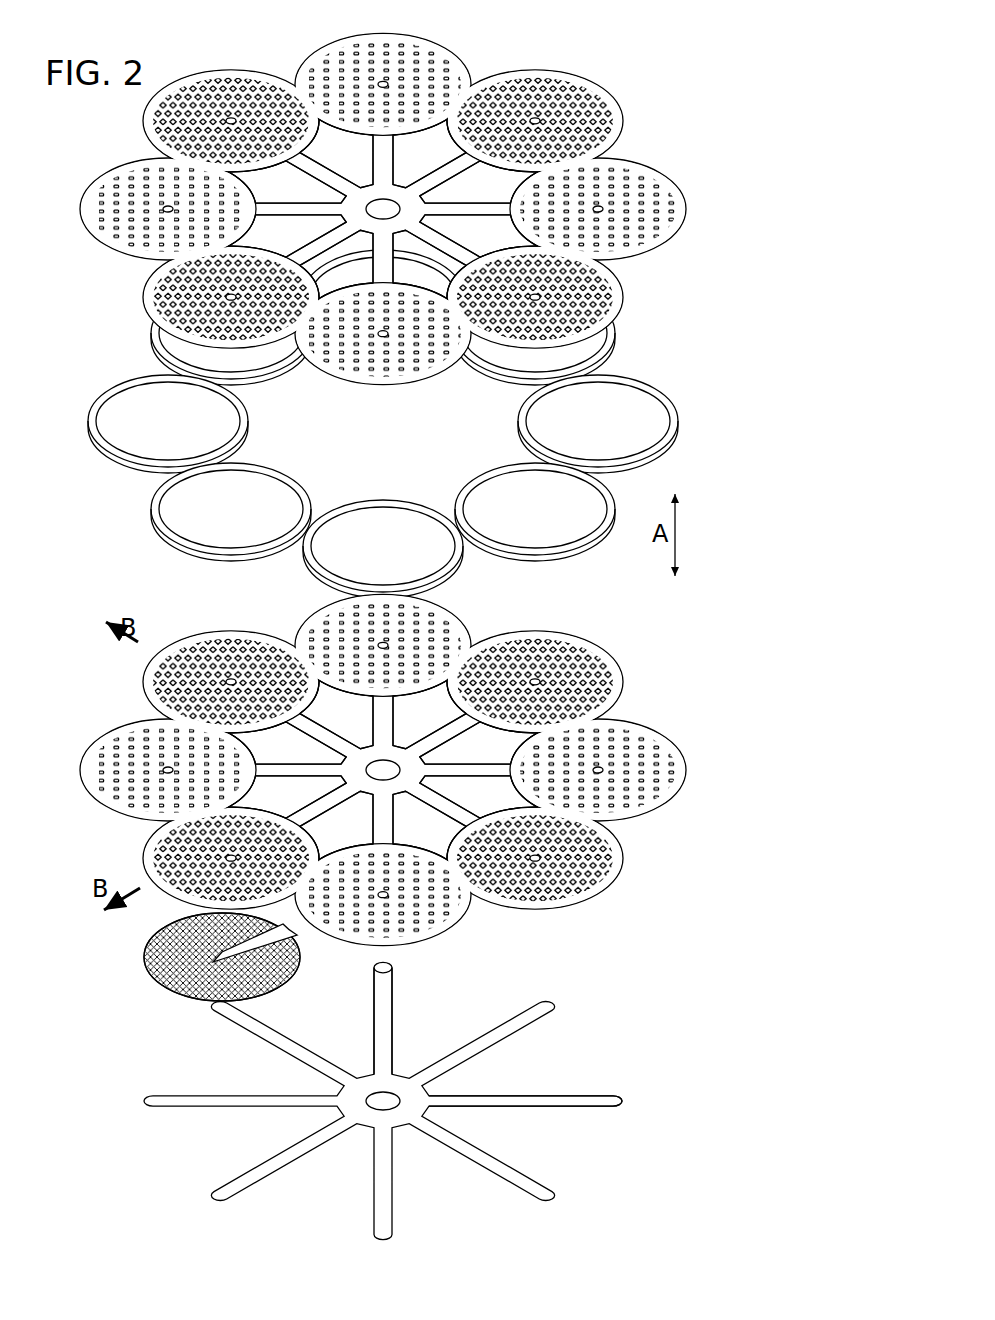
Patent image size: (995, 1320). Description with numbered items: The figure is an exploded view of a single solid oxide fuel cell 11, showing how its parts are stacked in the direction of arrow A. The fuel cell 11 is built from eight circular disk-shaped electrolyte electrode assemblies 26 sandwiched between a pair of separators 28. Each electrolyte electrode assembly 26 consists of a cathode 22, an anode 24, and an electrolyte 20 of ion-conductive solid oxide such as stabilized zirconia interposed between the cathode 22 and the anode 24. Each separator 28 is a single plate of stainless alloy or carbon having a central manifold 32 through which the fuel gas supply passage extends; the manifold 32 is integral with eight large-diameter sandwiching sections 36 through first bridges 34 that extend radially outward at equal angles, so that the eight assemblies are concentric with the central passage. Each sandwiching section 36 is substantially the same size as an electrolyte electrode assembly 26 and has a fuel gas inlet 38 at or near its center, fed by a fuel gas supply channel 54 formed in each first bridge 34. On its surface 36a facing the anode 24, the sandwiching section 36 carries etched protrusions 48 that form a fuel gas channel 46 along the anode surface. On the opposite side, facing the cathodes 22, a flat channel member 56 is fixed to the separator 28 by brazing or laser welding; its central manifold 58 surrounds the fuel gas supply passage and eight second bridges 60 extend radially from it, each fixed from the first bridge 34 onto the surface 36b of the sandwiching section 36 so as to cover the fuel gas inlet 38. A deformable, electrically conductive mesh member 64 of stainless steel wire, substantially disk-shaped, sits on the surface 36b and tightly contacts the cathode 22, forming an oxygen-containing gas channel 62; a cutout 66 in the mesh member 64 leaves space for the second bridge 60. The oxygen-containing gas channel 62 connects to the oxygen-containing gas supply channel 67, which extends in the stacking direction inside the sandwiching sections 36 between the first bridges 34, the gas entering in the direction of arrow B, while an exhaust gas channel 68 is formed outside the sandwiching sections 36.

The fuel cell 11 is at (579, 54).
The electrolyte 20 is at (210, 512).
The cathode 22 is at (206, 509).
The anode 24 is at (210, 535).
The electrolyte electrode assembly 26 is at (383, 424).
The separator 28 is at (405, 762).
The manifold 32 is at (479, 743).
The first bridge 34 is at (429, 714).
The sandwiching section 36 is at (383, 645).
The surface 36a is at (535, 858).
The surface 36b is at (383, 895).
The fuel gas inlet 38 is at (547, 642).
The fuel gas channel 46 is at (598, 770).
The protrusions 48 is at (442, 769).
The fuel gas supply channel 54 is at (429, 825).
The channel member 56 is at (383, 1099).
The manifold 58 is at (418, 1021).
The second bridge 60 is at (525, 1076).
The oxygen-containing gas channel 62 is at (535, 858).
The mesh member 64 is at (223, 977).
The cutout 66 is at (278, 962).
The oxygen-containing gas supply channel 67 is at (327, 796).
The exhaust gas channel 68 is at (231, 858).